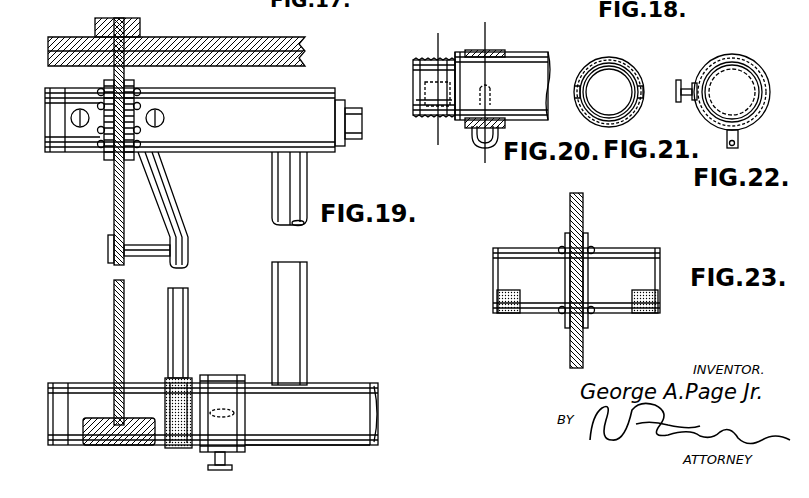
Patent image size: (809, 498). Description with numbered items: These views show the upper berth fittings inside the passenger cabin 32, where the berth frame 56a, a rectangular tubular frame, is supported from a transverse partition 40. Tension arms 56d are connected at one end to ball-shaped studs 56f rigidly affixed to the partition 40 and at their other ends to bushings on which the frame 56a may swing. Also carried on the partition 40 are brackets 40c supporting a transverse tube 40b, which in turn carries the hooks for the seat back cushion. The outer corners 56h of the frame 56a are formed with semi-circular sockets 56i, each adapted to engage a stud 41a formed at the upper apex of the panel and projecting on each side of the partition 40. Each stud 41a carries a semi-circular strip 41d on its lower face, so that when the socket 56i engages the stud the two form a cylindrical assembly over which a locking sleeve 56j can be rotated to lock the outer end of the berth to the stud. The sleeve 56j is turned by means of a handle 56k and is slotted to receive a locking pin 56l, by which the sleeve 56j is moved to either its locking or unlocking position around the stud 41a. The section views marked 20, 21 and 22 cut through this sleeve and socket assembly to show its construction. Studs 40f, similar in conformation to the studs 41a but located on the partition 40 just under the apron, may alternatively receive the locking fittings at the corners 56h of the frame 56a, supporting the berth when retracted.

In FIG. 19, the passenger cabin 32 is at (207, 37).
In FIG. 19, the transverse partition 40 is at (113, 328).
In FIG. 23, the transverse partition 40 is at (568, 338).
In FIG. 19, the transverse tube 40b is at (192, 316).
In FIG. 19, the brackets 40c is at (140, 258).
In FIG. 23, the studs 40f is at (640, 313).
In FIG. 19, the stud 41a is at (100, 385).
In FIG. 20, the stud 41a is at (420, 92).
In FIG. 21, the stud 41a is at (588, 80).
In FIG. 20, the semi-circular strip 41d is at (426, 116).
In FIG. 21, the semi-circular strip 41d is at (626, 118).
In FIG. 19, the pipe 20 is at (220, 402).
In FIG. 20, the section line 21 is at (432, 38).
In FIG. 20, the section line 22 is at (476, 26).
In FIG. 19, the frame 56a is at (258, 158).
In FIG. 20, the frame 56a is at (530, 60).
In FIG. 21, the frame 56a is at (604, 58).
In FIG. 22, the frame 56a is at (750, 56).
In FIG. 19, the tension arms 56d is at (165, 118).
In FIG. 19, the ball-shaped studs 56f is at (143, 104).
In FIG. 19, the outer corners 56h is at (258, 450).
In FIG. 19, the semi-circular sockets 56i is at (178, 413).
In FIG. 20, the semi-circular sockets 56i is at (412, 61).
In FIG. 19, the locking sleeve 56j is at (203, 378).
In FIG. 20, the locking sleeve 56j is at (460, 122).
In FIG. 21, the locking sleeve 56j is at (636, 108).
In FIG. 20, the handle 56k is at (533, 102).
In FIG. 22, the handle 56k is at (740, 143).
In FIG. 19, the locking pin 56l is at (236, 470).
In FIG. 20, the locking pin 56l is at (485, 137).
In FIG. 22, the locking pin 56l is at (684, 80).